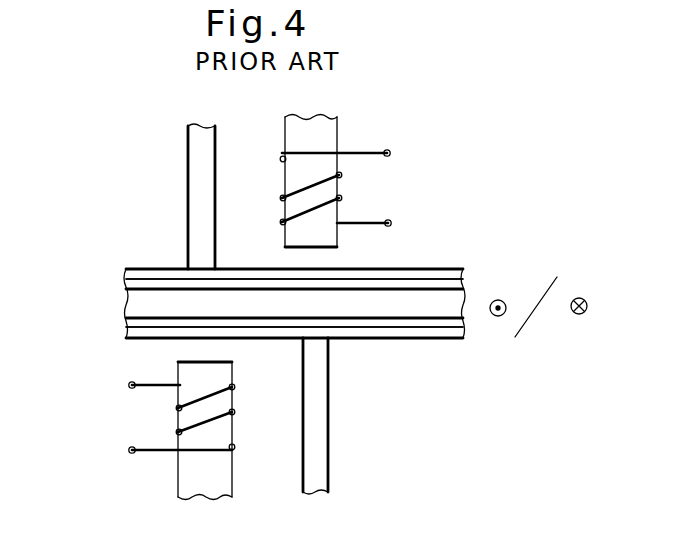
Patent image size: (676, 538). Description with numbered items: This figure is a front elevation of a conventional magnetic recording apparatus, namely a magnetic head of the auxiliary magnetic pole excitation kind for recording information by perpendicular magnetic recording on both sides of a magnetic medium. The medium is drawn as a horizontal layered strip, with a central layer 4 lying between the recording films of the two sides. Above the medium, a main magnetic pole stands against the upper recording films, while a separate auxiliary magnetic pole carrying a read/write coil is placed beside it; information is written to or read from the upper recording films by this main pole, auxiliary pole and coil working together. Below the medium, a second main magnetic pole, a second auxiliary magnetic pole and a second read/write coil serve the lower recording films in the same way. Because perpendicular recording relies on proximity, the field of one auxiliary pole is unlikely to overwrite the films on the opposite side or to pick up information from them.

The substrate 4 is at (412, 300).